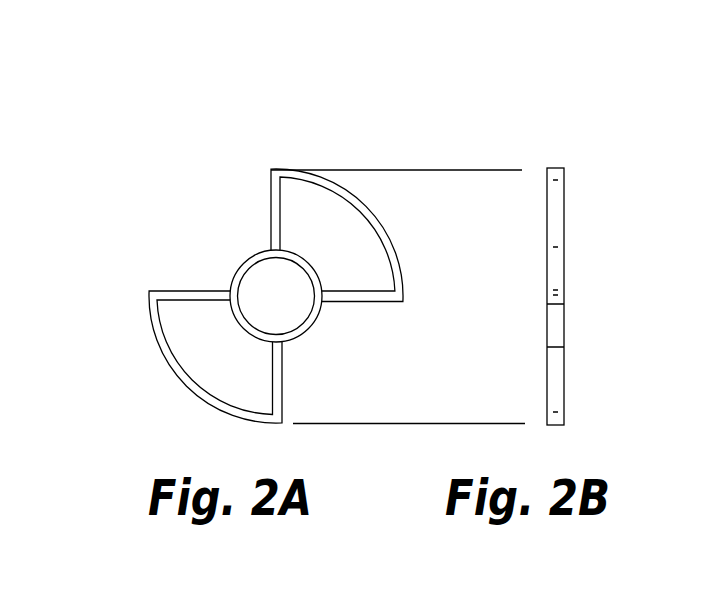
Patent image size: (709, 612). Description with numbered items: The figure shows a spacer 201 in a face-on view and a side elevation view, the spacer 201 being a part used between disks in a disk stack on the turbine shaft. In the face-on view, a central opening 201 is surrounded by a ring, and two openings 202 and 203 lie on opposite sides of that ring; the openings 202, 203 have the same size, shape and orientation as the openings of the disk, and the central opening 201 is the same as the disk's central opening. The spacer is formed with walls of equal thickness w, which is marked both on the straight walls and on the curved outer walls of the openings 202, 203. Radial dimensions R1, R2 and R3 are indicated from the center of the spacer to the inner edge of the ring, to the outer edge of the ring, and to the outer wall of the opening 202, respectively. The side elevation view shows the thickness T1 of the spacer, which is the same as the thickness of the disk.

In FIG. 2A, the spacer 201 is at (281, 229).
In FIG. 2A, the opening 202 is at (290, 200).
In FIG. 2A, the opening 203 is at (182, 327).
In FIG. 2A, the inner radius R1 is at (276, 296).
In FIG. 2A, the ring outer radius R2 is at (276, 296).
In FIG. 2A, the arm outer radius R3 is at (276, 296).
In FIG. 2A, the wall thickness w is at (215, 357).
In FIG. 2B, the thickness T1 is at (492, 138).